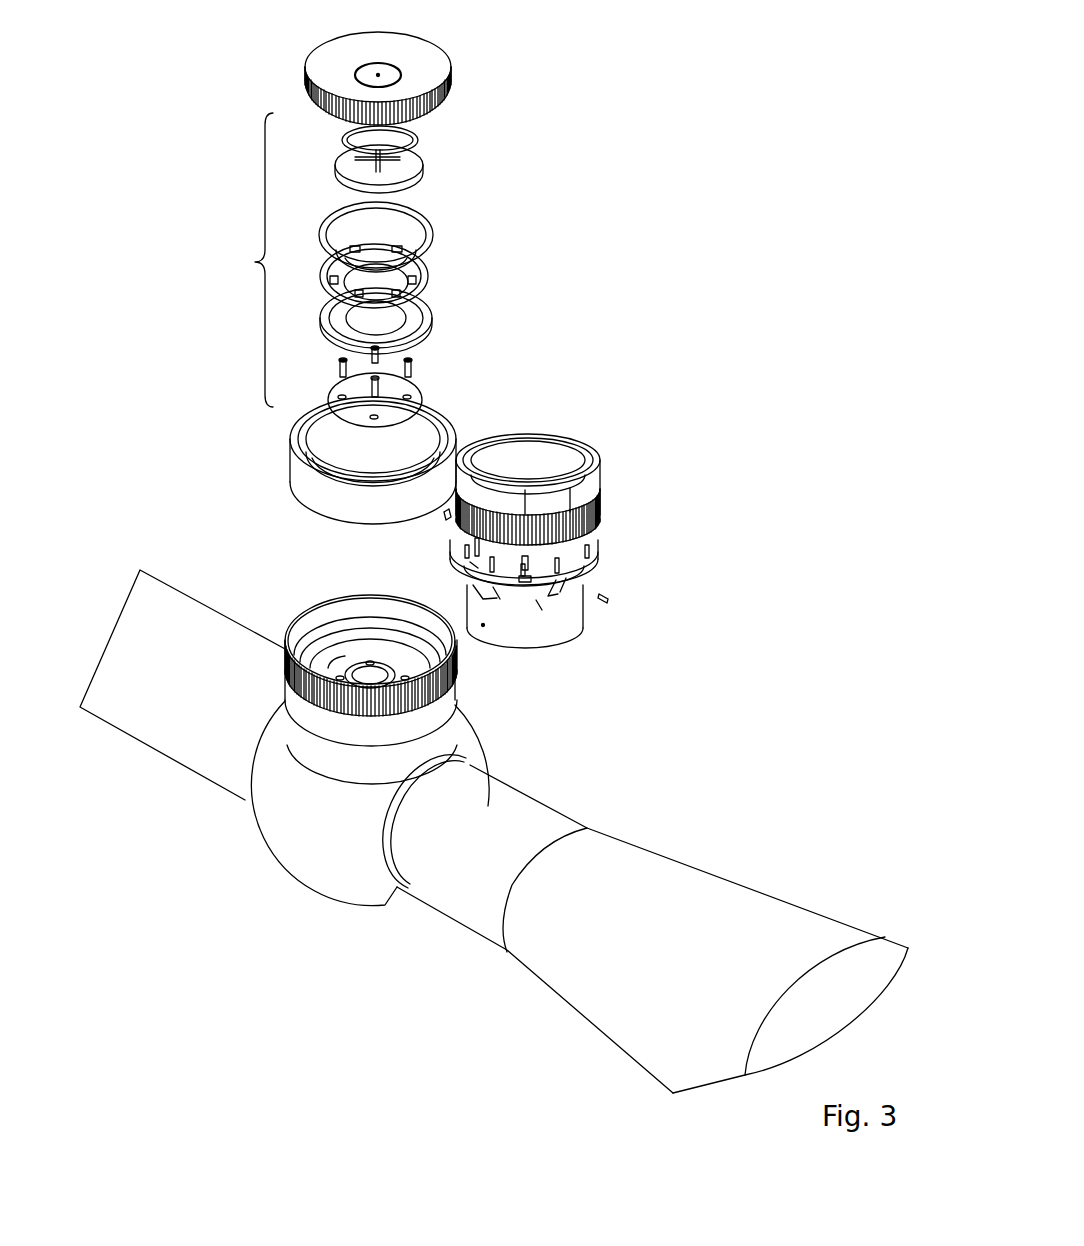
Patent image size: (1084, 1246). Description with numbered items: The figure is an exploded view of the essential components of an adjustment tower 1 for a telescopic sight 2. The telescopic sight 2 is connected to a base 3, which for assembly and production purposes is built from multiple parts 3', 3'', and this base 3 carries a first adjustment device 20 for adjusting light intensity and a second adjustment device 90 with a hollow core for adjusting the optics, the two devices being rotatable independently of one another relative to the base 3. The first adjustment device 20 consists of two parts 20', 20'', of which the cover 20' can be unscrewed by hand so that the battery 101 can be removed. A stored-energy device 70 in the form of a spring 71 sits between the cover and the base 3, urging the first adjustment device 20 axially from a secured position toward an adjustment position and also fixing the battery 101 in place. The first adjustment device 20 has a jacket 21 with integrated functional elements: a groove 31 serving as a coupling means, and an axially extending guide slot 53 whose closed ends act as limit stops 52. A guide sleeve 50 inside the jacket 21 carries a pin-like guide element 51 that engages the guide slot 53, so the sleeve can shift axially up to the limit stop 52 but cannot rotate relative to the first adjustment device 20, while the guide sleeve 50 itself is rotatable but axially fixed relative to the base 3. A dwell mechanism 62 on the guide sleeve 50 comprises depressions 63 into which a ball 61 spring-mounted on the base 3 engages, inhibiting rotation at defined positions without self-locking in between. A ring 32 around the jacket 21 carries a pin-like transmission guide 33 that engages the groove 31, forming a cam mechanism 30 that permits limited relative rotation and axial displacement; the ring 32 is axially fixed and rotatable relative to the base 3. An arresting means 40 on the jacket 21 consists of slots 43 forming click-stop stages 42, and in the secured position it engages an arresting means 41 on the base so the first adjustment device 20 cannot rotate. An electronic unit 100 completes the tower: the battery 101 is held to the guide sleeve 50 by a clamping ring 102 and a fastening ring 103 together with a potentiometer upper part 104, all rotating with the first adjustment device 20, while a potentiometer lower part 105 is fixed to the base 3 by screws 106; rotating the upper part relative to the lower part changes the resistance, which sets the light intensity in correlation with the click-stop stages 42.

The adjustment tower 1 is at (145, 82).
The telescopic sight 2 is at (596, 971).
The base 3 is at (324, 782).
The base part 3' is at (369, 855).
The base part 3'' is at (337, 460).
The first adjustment device 20 is at (533, 448).
The cover 20' is at (549, 443).
The second part of first adjustment device 20'' is at (436, 76).
The jacket 21 is at (588, 537).
The cam mechanism 30 is at (582, 553).
The groove 31 is at (583, 569).
The ring 32 is at (600, 565).
The transmission guide 33 is at (614, 602).
The arresting means 40 is at (525, 554).
The arresting means 41 is at (420, 661).
The click-stop stages 42 is at (540, 611).
The slots 43 is at (524, 578).
The guide sleeve 50 is at (558, 634).
The guide element 51 is at (458, 668).
The limit stop 52 is at (470, 565).
The guide slot 53 is at (470, 557).
The ball 61 is at (330, 657).
The dwell mechanism 62 is at (552, 606).
The depressions 63 is at (538, 608).
The stored-energy device 70 is at (416, 136).
The spring 71 is at (414, 154).
The second adjustment device 90 is at (322, 737).
The electronic unit 100 is at (234, 260).
The battery 101 is at (420, 165).
The clamping ring 102 is at (432, 276).
The fastening ring 103 is at (432, 245).
The potentiometer upper part 104 is at (432, 311).
The potentiometer lower part 105 is at (413, 410).
The screws 106 is at (415, 360).